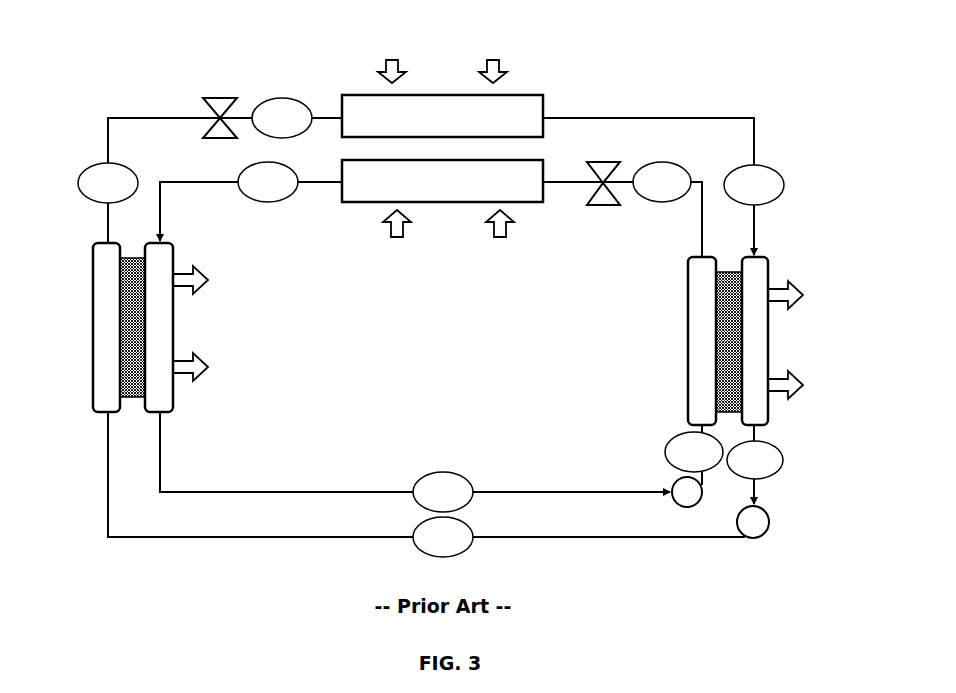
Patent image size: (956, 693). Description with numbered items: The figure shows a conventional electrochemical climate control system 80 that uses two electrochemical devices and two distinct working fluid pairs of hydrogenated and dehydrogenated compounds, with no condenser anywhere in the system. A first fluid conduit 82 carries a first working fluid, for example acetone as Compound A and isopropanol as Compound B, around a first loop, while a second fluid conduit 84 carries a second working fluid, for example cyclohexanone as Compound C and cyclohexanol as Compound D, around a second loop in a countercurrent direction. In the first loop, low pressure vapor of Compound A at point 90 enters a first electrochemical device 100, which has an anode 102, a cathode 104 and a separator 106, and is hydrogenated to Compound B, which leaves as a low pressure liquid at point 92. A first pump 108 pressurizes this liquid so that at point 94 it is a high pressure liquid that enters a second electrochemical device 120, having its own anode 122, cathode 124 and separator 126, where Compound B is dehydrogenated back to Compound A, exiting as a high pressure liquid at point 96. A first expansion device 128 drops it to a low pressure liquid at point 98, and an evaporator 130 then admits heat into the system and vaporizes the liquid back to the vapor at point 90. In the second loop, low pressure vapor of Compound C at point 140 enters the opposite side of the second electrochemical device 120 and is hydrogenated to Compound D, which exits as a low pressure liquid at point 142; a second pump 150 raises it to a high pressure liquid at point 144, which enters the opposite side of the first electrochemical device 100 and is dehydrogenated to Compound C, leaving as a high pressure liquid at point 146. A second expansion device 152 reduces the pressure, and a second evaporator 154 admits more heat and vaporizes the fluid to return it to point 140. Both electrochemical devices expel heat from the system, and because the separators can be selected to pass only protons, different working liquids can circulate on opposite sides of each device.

The electrochemical climate control system 80 is at (133, 68).
The first fluid conduit 82 is at (708, 118).
The second fluid conduit 84 is at (510, 492).
The point 90 is at (754, 185).
The point 92 is at (755, 460).
The point 94 is at (443, 537).
The point 96 is at (108, 183).
The point 98 is at (282, 118).
The first electrochemical device 100 is at (733, 324).
The anode 102 is at (705, 350).
The cathode 104 is at (750, 350).
The separator 106 is at (745, 325).
The first pump 108 is at (766, 512).
The second electrochemical device 120 is at (139, 322).
The anode 122 is at (105, 350).
The cathode 124 is at (158, 340).
The separator 126 is at (148, 314).
The first expansion device 128 is at (220, 98).
The evaporator 130 is at (442, 98).
The point 140 is at (431, 209).
The point 142 is at (443, 492).
The point 144 is at (694, 452).
The point 146 is at (662, 182).
The second pump 150 is at (676, 482).
The second expansion device 152 is at (607, 162).
The second evaporator 154 is at (442, 198).